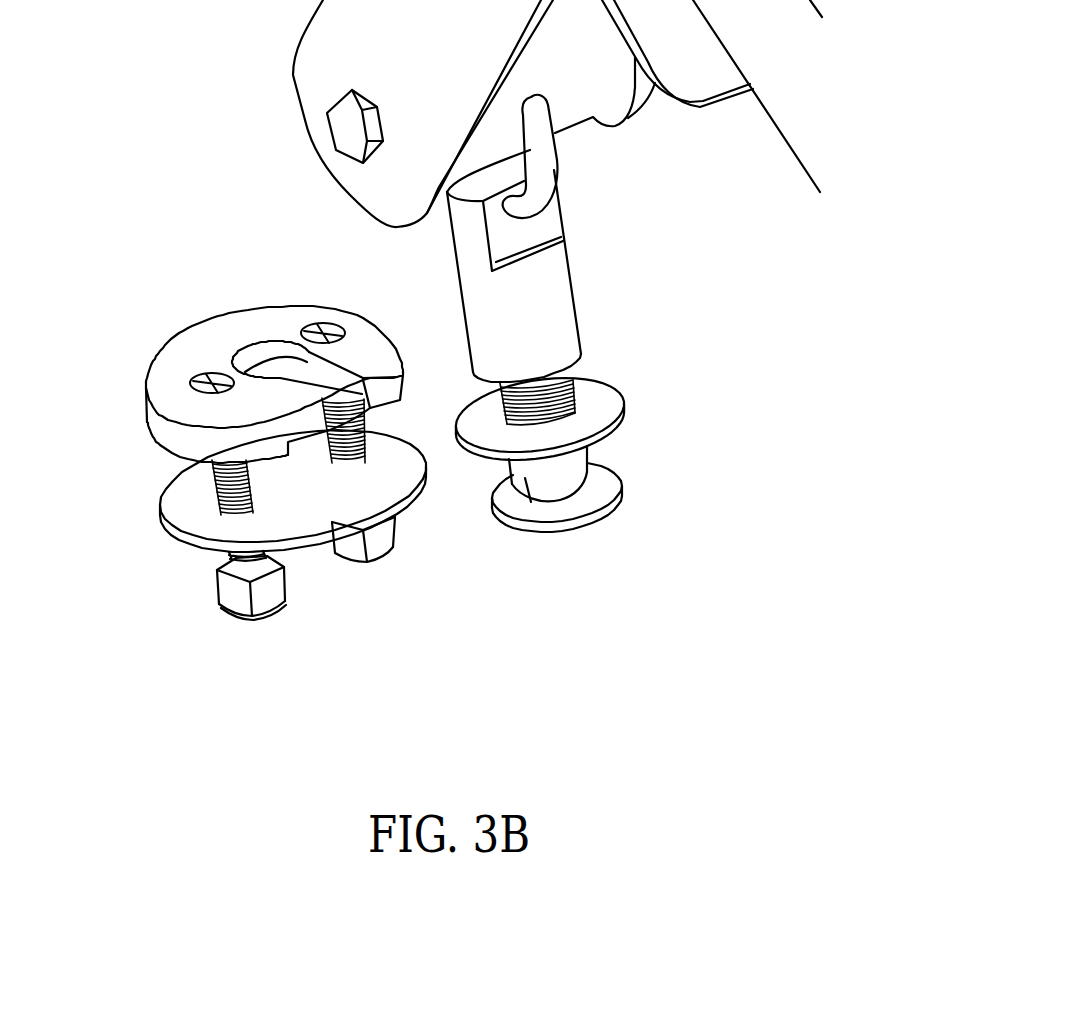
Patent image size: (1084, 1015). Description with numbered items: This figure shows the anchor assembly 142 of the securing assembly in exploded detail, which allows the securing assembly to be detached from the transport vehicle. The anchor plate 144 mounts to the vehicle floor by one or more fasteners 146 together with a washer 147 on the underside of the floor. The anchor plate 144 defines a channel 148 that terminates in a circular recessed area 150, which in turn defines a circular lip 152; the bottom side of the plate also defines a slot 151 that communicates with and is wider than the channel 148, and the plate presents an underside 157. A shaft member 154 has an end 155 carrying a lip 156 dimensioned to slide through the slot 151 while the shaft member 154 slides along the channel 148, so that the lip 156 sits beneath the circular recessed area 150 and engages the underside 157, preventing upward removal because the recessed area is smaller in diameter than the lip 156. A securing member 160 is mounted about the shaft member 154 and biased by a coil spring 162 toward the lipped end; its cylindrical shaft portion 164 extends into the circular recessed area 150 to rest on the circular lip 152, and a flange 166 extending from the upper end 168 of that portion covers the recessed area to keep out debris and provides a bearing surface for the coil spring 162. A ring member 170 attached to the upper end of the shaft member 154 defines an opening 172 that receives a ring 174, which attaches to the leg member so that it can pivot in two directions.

The anchor assembly 142 is at (267, 423).
The anchor plate 144 is at (163, 428).
The fasteners 146 is at (196, 383).
The washer 147 is at (307, 538).
The channel 148 is at (370, 436).
The circular recessed area 150 is at (263, 335).
The slot 151 is at (305, 453).
The circular lip 152 is at (288, 368).
The underside 157 is at (198, 478).
The shaft member 154 is at (592, 480).
The end 155 is at (597, 524).
The lip 156 is at (528, 524).
The securing member 160 is at (552, 460).
The coil spring 162 is at (576, 404).
The cylindrical shaft portion 164 is at (589, 452).
The flange 166 is at (482, 421).
The upper end 168 is at (592, 322).
The ring member 170 is at (557, 220).
The opening 172 is at (497, 210).
The ring 174 is at (551, 161).